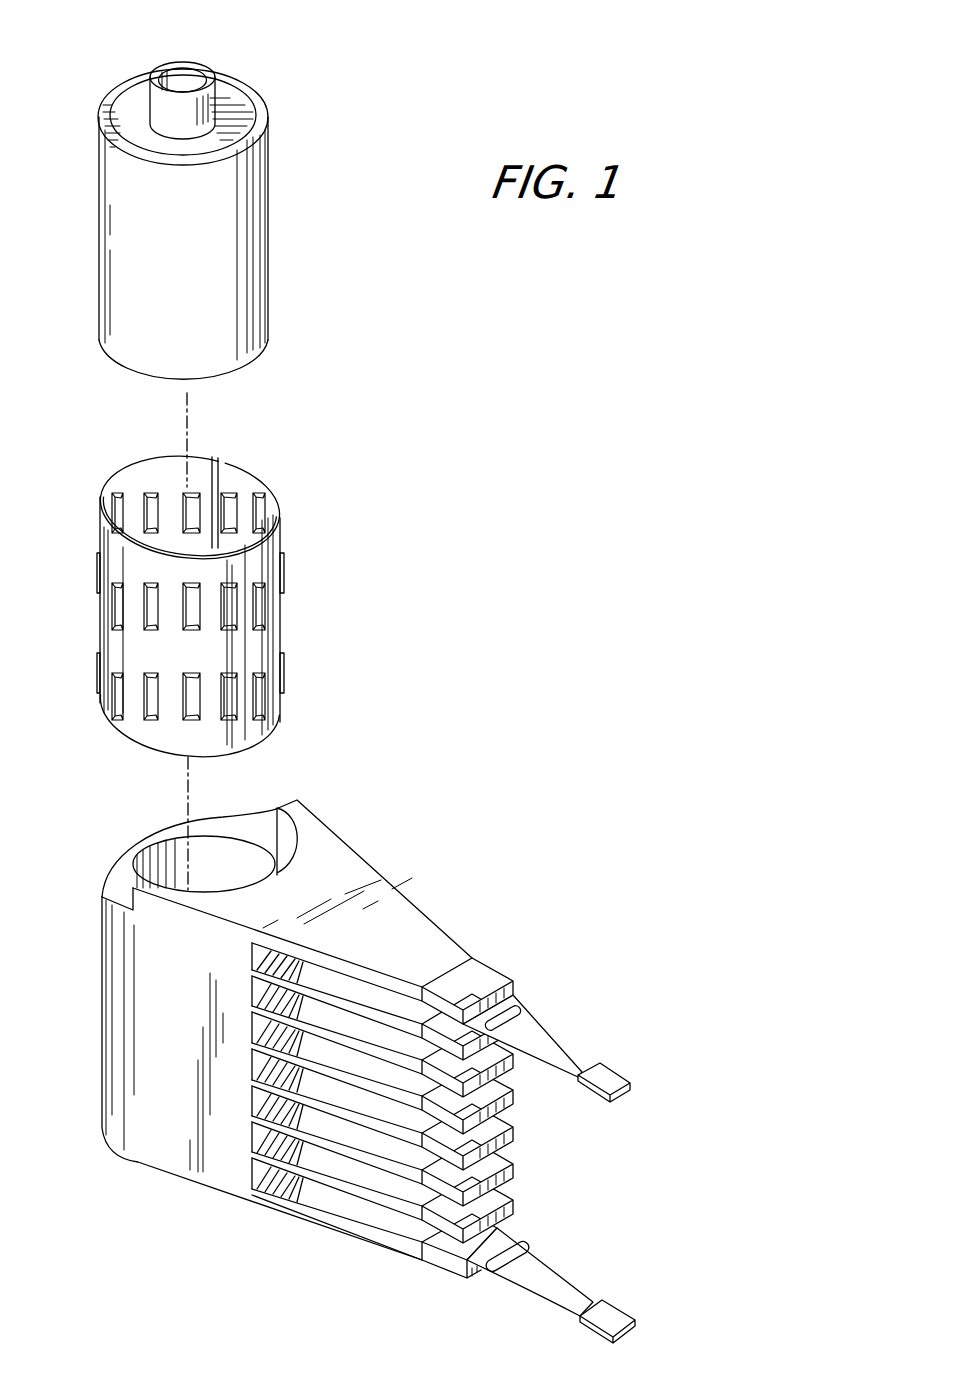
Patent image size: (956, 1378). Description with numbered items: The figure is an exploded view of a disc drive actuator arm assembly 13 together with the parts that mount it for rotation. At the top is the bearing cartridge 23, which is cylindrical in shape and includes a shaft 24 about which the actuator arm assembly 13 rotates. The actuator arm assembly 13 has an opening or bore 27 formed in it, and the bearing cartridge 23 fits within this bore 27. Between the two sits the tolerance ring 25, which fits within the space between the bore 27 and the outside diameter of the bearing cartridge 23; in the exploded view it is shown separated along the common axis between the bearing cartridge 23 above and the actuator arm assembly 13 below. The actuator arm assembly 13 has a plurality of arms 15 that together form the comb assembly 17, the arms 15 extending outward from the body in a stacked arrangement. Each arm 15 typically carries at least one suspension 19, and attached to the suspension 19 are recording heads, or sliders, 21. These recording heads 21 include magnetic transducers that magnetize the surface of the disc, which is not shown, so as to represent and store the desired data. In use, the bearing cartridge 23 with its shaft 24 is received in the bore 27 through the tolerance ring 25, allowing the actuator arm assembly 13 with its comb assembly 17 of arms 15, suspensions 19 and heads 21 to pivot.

The actuator arm assembly 13 is at (158, 1146).
The arm 15 is at (393, 908).
The comb assembly 17 is at (328, 1226).
The suspension 19 is at (547, 1033).
The recording head (slider) 21 is at (632, 1083).
The bearing cartridge 23 is at (258, 259).
The shaft 24 is at (189, 62).
The tolerance ring 25 is at (282, 618).
The bore 27 is at (283, 840).